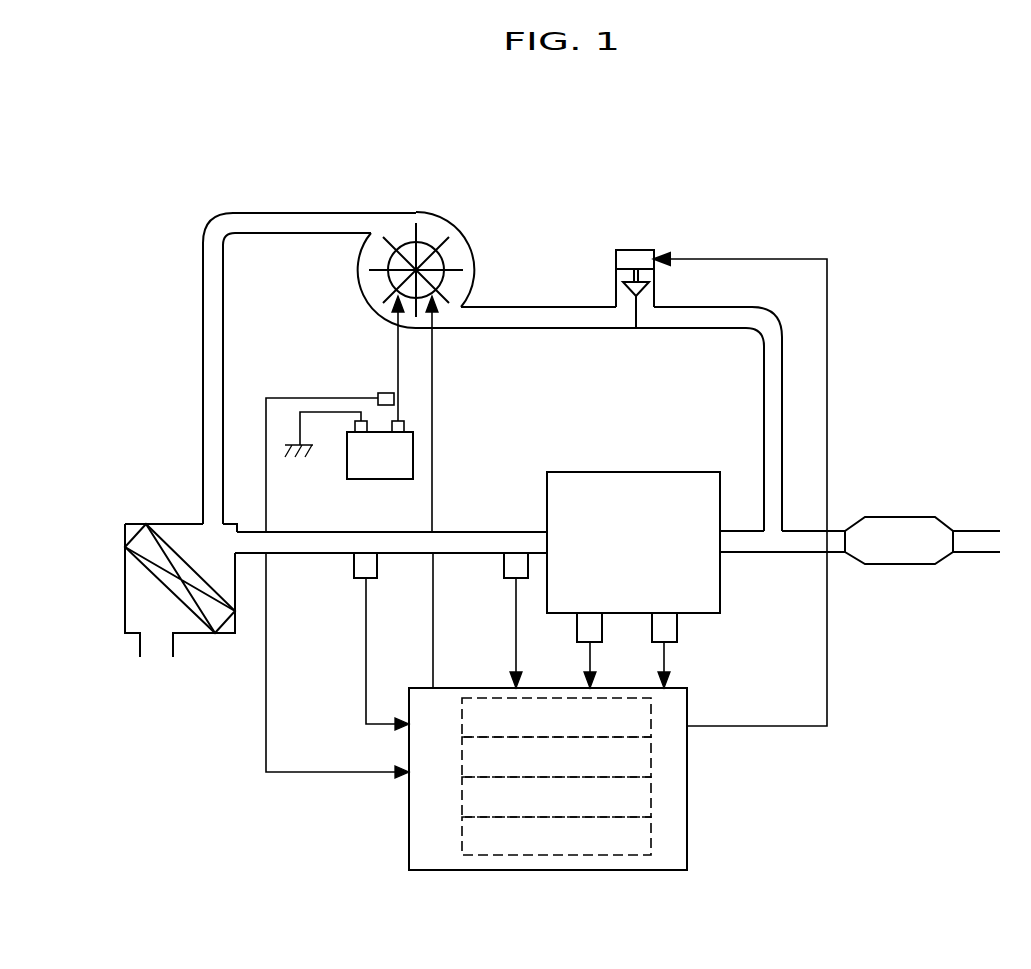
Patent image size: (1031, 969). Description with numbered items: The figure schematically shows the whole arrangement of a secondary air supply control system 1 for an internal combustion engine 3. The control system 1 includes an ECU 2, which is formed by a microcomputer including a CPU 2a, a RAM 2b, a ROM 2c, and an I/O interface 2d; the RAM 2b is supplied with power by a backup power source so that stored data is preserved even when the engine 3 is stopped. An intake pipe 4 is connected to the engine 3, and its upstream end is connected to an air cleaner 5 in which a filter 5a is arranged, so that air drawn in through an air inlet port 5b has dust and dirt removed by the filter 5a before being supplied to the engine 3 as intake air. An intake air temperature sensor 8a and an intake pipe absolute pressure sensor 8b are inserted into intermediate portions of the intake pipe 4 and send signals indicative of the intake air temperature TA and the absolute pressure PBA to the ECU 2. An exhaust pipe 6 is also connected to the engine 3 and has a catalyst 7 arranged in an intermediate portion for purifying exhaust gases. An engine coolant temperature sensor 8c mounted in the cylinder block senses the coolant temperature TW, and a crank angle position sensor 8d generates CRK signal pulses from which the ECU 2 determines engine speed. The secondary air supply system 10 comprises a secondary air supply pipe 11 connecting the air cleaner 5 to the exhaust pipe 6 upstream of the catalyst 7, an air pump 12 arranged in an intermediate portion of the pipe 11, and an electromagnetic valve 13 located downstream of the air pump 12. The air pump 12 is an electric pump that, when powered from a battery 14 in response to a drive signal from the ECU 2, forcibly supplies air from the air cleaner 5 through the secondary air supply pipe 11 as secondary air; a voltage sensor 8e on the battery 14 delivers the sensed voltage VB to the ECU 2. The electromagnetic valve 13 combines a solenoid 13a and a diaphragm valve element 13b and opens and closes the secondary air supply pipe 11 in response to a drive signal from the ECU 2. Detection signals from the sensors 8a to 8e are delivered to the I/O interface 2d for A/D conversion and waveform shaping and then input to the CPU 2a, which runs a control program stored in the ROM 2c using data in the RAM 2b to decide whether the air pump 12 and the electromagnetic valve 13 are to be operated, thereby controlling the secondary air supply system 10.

The secondary air supply control system 1 is at (850, 782).
The ECU 2 is at (571, 713).
The CPU 2a is at (651, 835).
The RAM 2b is at (651, 797).
The ROM 2c is at (651, 757).
The I/O interface 2d is at (651, 715).
The internal combustion engine 3 is at (648, 472).
The intake pipe 4 is at (490, 532).
The air cleaner 5 is at (125, 595).
The filter 5a is at (165, 578).
The air inlet port 5b is at (142, 648).
The exhaust pipe 6 is at (797, 552).
The catalyst 7 is at (910, 517).
The intake air temperature sensor 8a is at (354, 578).
The intake pipe absolute pressure sensor 8b is at (504, 578).
The engine coolant temperature sensor 8c is at (577, 630).
The crank angle position sensor 8d is at (677, 630).
The voltage sensor 8e is at (380, 393).
The secondary air supply system 10 is at (576, 165).
The secondary air supply pipe 11 is at (272, 213).
The air pump 12 is at (418, 245).
The electromagnetic valve 13 is at (606, 266).
The solenoid 13a is at (636, 259).
The diaphragm valve element 13b is at (643, 284).
The battery 14 is at (378, 479).